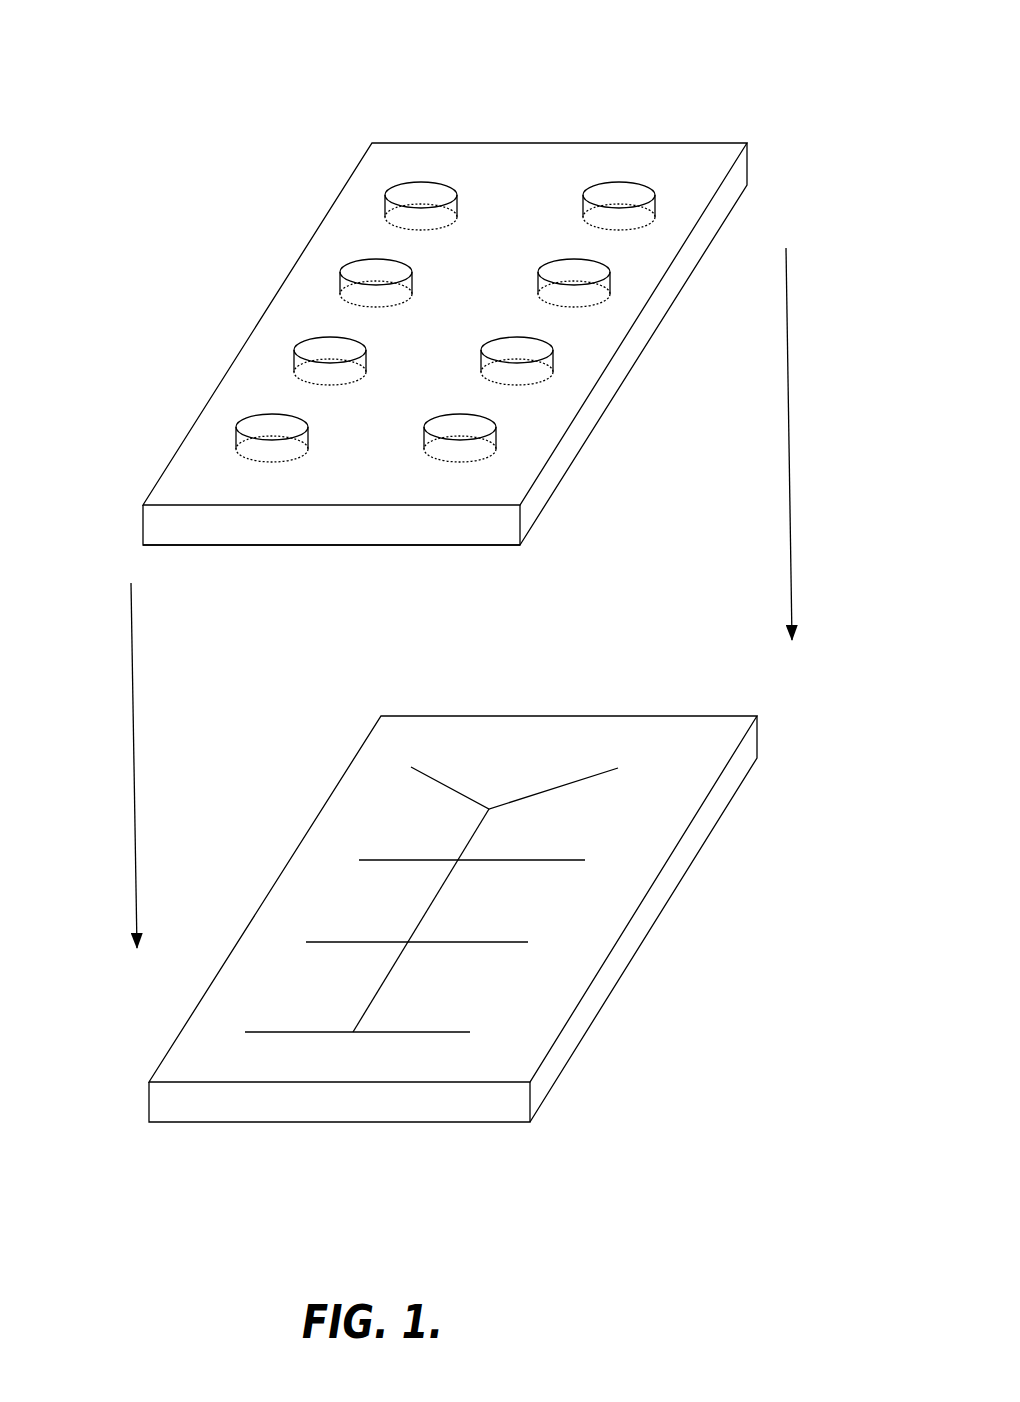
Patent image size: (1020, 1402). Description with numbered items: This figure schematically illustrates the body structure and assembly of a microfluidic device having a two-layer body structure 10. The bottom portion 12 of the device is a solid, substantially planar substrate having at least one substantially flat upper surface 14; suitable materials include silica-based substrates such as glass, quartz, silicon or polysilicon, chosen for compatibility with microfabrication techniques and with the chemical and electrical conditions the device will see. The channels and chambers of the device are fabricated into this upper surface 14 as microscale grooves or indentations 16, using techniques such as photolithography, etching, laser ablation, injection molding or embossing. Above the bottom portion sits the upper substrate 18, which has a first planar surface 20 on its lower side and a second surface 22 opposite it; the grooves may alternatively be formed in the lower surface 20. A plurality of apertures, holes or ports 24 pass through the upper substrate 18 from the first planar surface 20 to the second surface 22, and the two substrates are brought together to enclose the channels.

The two-layer body structure 10 is at (196, 100).
The bottom portion 12 is at (424, 1123).
The upper surface 14 is at (668, 807).
The microscale grooves or indentations 16 is at (245, 1030).
The upper substrate 18 is at (690, 143).
The first planar surface 20 is at (237, 545).
The second surface 22 is at (503, 168).
The apertures, holes or ports 24 is at (383, 208).